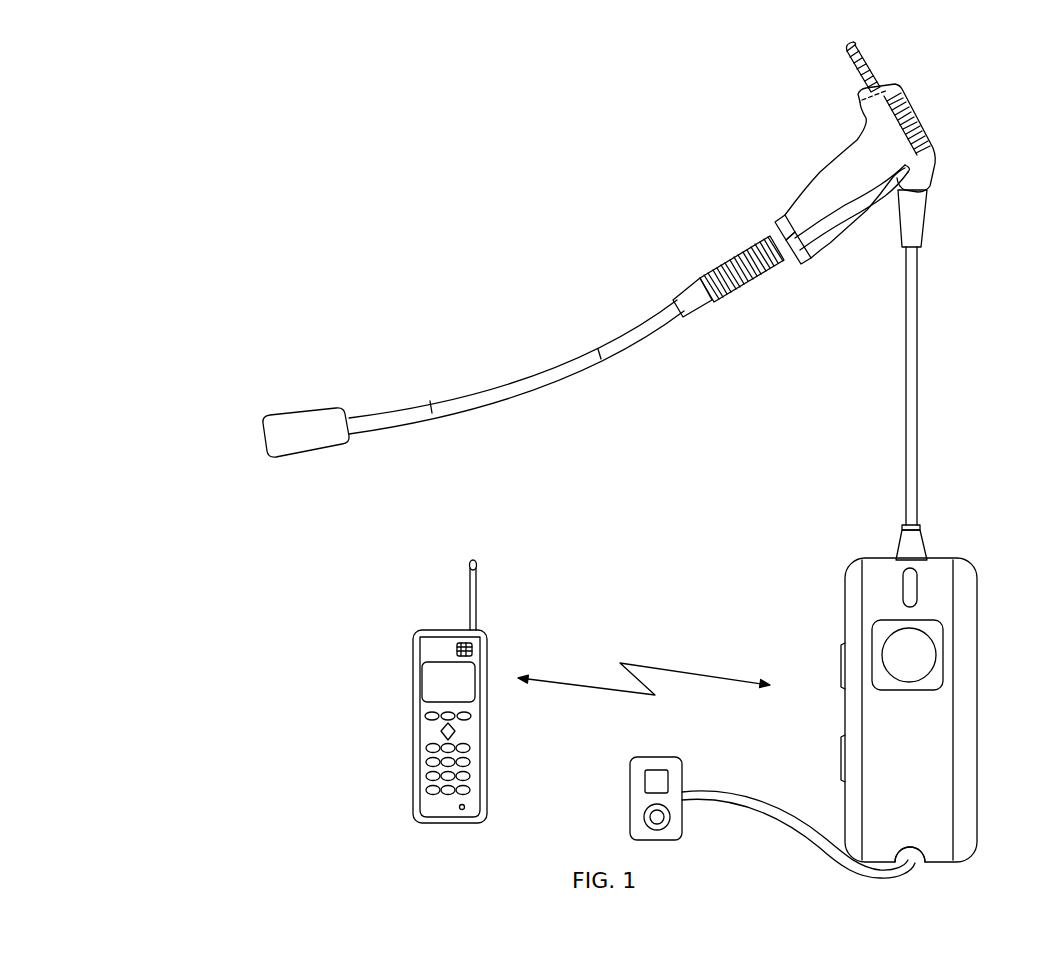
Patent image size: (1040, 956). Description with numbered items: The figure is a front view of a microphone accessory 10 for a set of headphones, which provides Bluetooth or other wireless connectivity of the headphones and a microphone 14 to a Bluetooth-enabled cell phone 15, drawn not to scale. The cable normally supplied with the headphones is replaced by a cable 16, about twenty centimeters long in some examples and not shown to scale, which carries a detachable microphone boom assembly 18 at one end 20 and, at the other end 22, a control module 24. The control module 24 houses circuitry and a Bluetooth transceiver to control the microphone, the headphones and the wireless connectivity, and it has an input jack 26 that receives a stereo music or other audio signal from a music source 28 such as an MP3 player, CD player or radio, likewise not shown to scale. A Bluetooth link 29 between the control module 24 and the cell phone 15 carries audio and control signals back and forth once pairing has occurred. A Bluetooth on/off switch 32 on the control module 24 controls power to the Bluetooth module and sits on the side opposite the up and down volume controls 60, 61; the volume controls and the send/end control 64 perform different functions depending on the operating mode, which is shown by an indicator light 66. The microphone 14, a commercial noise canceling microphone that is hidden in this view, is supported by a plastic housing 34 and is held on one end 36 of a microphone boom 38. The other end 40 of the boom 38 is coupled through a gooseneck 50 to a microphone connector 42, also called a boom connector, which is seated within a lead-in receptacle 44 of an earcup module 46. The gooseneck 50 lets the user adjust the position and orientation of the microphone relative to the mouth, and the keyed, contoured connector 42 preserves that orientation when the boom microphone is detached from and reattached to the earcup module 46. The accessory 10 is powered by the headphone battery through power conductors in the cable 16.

The microphone accessory 10 is at (218, 140).
The microphone 14 is at (275, 410).
The cell phone 15 is at (455, 823).
The cable 16 is at (920, 410).
The detachable microphone boom assembly 18 is at (850, 340).
The one end 20 is at (928, 248).
The other end 22 is at (922, 517).
The control module 24 is at (923, 778).
The input jack 26 is at (913, 864).
The music source 28 is at (630, 798).
The Bluetooth link 29 is at (693, 672).
The Bluetooth on/off switch 32 is at (977, 663).
The plastic housing 34 is at (289, 438).
The one end of microphone boom 36 is at (360, 432).
The microphone boom 38 is at (663, 325).
The other end of boom 40 is at (777, 222).
The microphone connector 42 is at (803, 262).
The lead-in receptacle 44 is at (822, 196).
The earcup module 46 is at (945, 140).
The gooseneck 50 is at (762, 280).
The up volume control 60 is at (840, 663).
The down volume control 61 is at (840, 757).
The send/end control 64 is at (935, 636).
The indicator light 66 is at (918, 595).